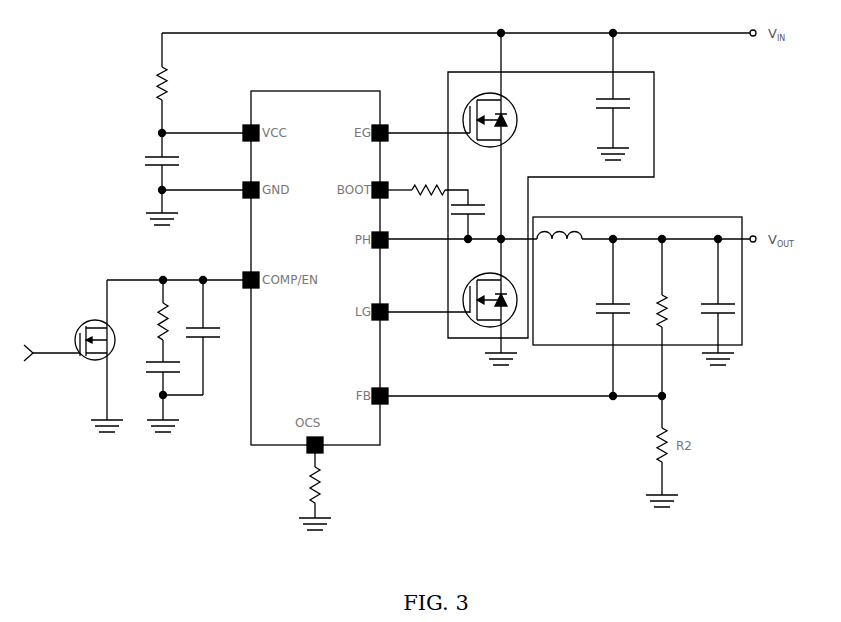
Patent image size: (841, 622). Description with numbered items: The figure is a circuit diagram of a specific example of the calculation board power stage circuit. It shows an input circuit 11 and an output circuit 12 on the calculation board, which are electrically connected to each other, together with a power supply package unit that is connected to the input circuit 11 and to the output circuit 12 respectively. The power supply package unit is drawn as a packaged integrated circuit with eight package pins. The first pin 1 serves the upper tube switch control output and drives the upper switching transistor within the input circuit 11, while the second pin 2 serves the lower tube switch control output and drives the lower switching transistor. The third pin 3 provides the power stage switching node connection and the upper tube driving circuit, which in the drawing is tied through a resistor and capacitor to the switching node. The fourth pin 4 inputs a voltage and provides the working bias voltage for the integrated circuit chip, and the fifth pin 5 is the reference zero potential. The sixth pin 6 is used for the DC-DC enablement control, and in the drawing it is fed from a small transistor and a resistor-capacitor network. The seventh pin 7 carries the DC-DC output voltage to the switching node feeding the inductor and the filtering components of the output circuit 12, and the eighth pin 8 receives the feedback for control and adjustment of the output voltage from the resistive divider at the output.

The input circuit 11 is at (656, 135).
The output circuit 12 is at (742, 288).
The first pin 1 is at (387, 119).
The second pin 2 is at (387, 299).
The third pin 3 is at (387, 176).
The fourth pin 4 is at (244, 119).
The fifth pin 5 is at (244, 176).
The sixth pin 6 is at (244, 265).
The seventh pin 7 is at (387, 230).
The eighth pin 8 is at (387, 383).